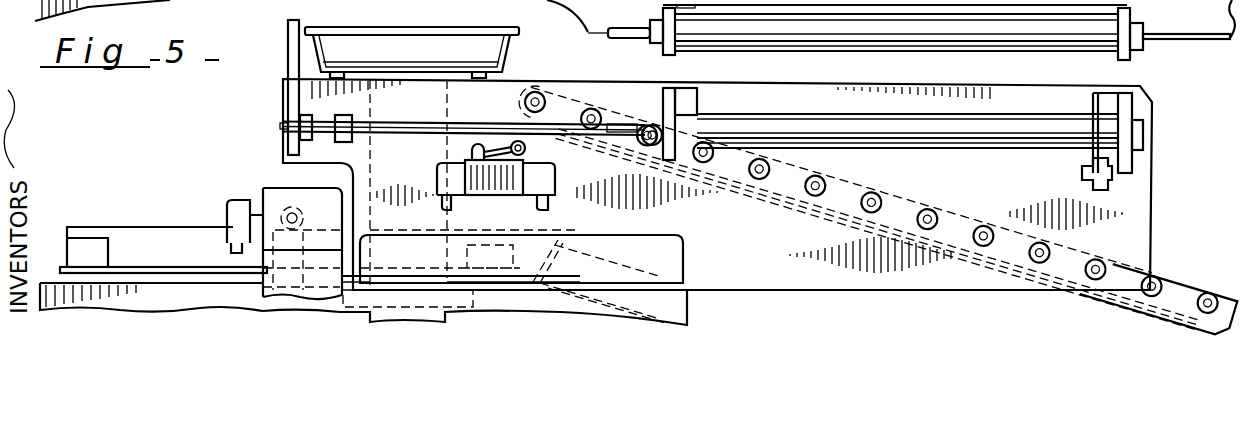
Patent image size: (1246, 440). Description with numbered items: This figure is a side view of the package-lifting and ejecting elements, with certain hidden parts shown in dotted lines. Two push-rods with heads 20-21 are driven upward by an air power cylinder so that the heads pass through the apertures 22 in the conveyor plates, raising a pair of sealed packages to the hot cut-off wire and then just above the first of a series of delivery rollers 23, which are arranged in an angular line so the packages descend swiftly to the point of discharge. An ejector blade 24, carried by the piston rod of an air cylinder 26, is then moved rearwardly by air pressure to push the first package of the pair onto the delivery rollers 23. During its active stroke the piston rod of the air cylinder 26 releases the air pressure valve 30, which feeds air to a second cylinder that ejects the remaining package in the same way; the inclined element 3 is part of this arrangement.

The link strip 3 is at (875, 210).
The push-rods having heads 20-21 is at (352, 233).
The apertures 22 is at (457, 78).
The delivery rollers 23 is at (420, 33).
The ejector blade 24 is at (288, 49).
The air cylinder 26 is at (898, 47).
The air pressure valve 30 is at (518, 194).